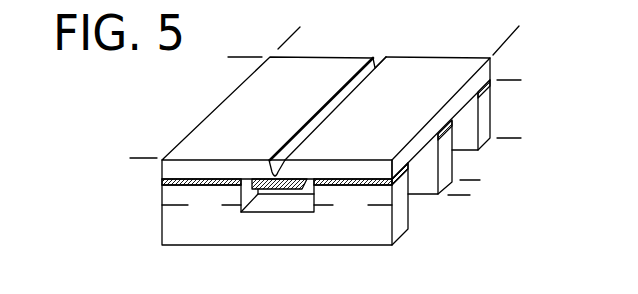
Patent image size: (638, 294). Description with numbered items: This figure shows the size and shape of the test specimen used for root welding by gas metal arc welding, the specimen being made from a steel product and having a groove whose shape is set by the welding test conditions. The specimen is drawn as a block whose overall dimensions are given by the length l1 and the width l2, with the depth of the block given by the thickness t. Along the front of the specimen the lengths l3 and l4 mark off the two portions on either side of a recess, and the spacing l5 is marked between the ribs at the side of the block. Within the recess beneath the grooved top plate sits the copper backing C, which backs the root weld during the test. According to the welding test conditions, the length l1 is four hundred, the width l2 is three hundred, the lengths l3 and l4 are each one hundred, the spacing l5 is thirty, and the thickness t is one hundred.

The test specimen length l1 is at (233, 57).
The test specimen width l2 is at (513, 32).
The specimen dimension l3 is at (201, 205).
The specimen dimension l4 is at (353, 205).
The specimen dimension l5 is at (460, 207).
The specimen thickness t is at (515, 80).
The copper backing C is at (279, 187).